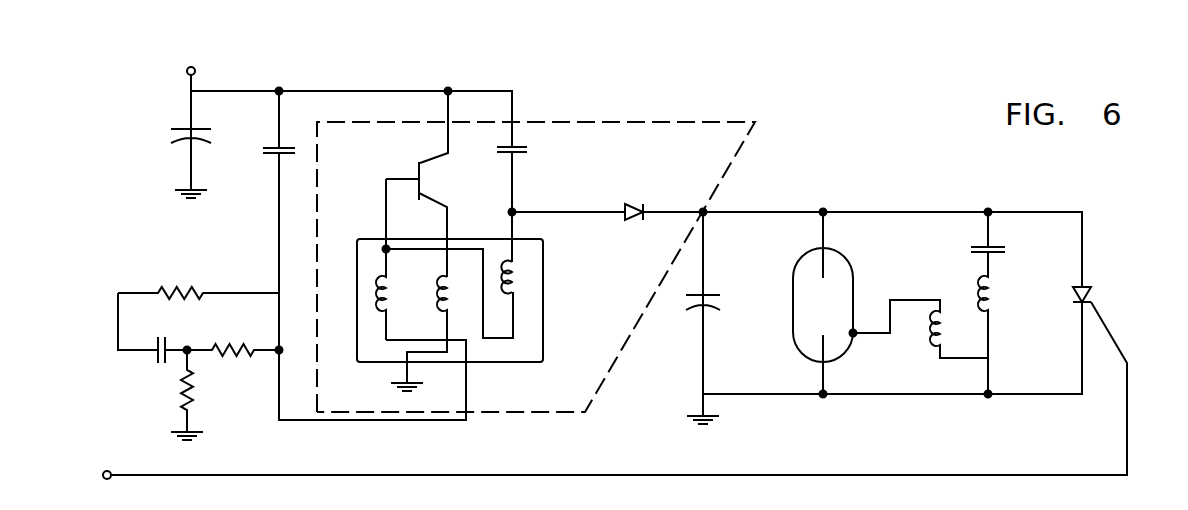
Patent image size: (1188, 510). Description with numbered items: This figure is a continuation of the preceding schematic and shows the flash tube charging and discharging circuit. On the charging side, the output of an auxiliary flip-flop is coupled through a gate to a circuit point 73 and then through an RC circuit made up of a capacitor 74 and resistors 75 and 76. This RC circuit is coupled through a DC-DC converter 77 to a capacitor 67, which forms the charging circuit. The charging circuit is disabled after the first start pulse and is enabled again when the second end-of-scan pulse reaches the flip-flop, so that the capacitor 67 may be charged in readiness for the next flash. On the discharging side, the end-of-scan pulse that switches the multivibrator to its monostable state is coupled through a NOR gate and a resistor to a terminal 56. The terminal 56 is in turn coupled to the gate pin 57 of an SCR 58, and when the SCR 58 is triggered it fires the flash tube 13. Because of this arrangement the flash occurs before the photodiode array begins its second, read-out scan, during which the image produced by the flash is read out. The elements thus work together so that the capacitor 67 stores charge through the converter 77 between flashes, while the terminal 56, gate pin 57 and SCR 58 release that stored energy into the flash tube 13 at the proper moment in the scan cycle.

The flash tube 13 is at (838, 319).
The terminal 56 is at (108, 470).
The gate pin 57 is at (1113, 336).
The SCR 58 is at (1078, 292).
The capacitor 67 is at (718, 293).
The circuit point 73 is at (117, 352).
The capacitor 74 is at (170, 340).
The resistor 75 is at (166, 290).
The resistor 76 is at (228, 357).
The DC-DC converter 77 is at (742, 150).